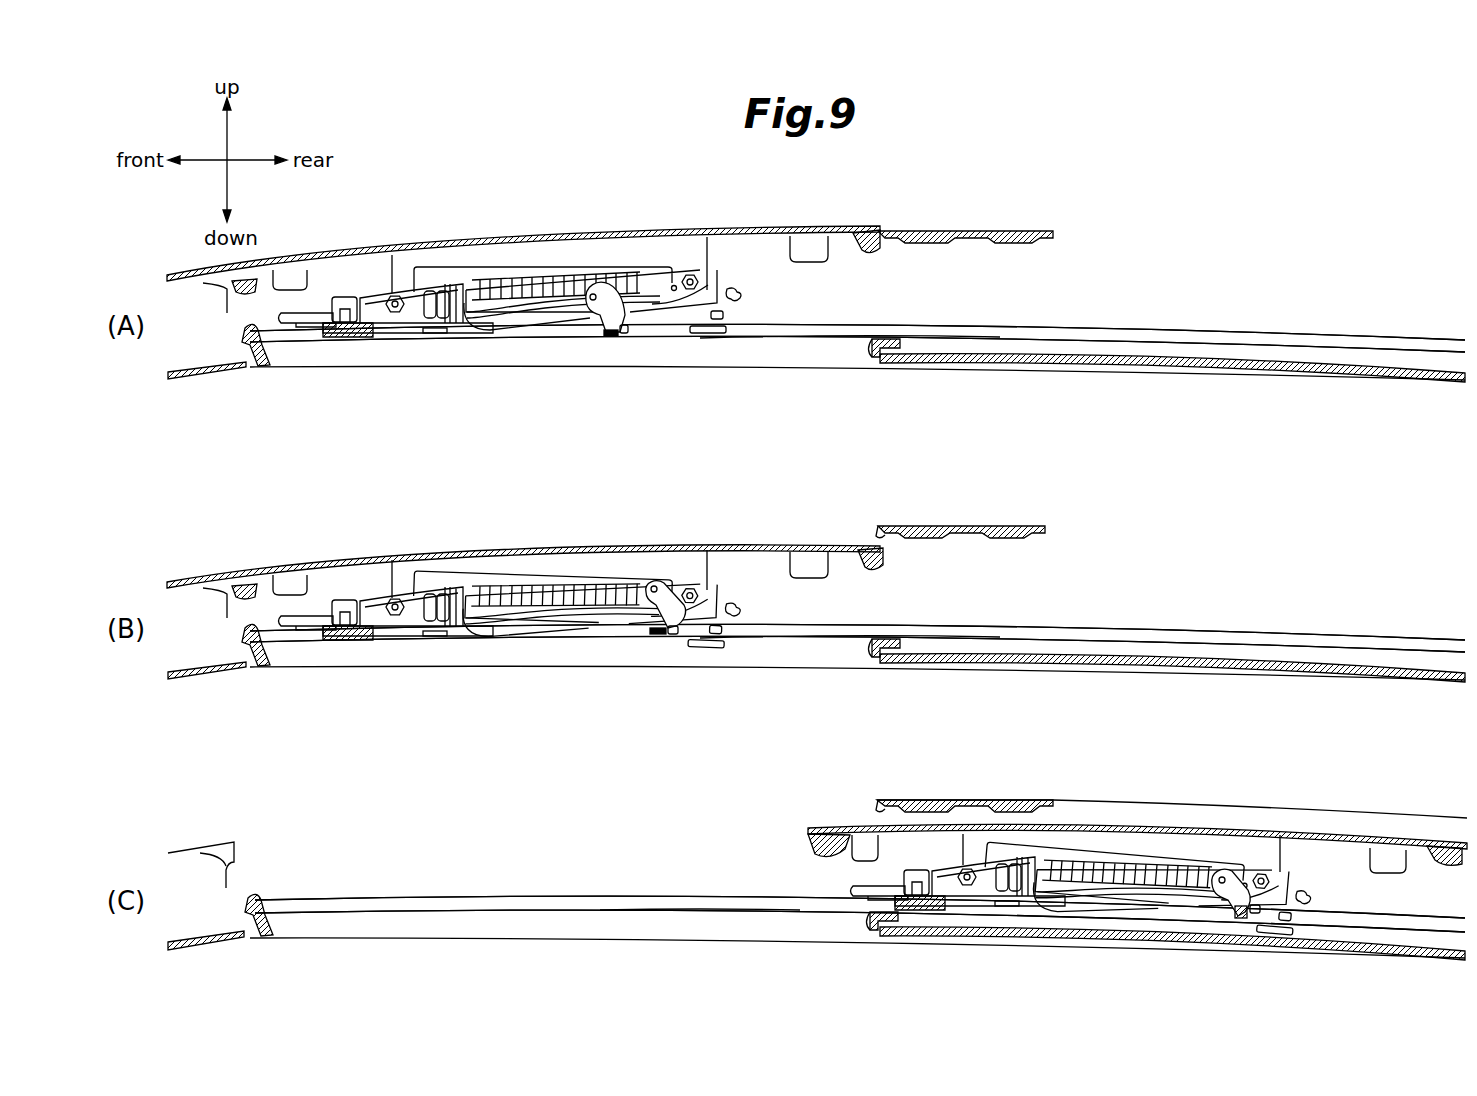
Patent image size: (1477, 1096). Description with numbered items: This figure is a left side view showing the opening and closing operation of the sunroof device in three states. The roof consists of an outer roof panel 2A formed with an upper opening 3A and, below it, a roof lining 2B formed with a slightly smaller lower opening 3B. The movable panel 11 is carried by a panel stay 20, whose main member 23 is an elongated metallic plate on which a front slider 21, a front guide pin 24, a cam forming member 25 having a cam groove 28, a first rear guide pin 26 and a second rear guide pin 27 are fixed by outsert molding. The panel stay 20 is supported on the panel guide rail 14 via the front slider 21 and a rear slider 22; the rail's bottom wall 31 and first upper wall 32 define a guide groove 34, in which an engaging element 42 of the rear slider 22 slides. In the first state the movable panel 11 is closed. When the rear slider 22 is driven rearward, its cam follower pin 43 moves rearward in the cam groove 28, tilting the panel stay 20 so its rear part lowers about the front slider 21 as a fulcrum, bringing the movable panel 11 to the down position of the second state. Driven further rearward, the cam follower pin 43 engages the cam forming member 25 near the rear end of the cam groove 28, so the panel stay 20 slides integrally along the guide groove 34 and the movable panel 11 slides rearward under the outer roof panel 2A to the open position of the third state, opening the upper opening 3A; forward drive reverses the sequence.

The movable panel 11 is at (738, 231).
The panel guide rail 14 is at (857, 322).
The panel stay 20 is at (556, 278).
The front slider 21 is at (347, 297).
The rear slider 22 is at (610, 336).
The main member 23 is at (457, 284).
The front guide pin 24 is at (432, 333).
The cam forming member 25 is at (619, 278).
The first rear guide pin 26 is at (700, 320).
The second rear guide pin 27 is at (742, 294).
The cam groove 28 is at (520, 318).
The outer roof panel 2A is at (985, 232).
The roof lining 2B is at (1005, 364).
The bottom wall 31 is at (780, 340).
The first upper wall 32 is at (757, 326).
The guide groove 34 is at (822, 334).
The upper opening 3A is at (882, 232).
The lower opening 3B is at (878, 356).
The engaging element 42 is at (625, 325).
The cam follower pin 43 is at (573, 313).